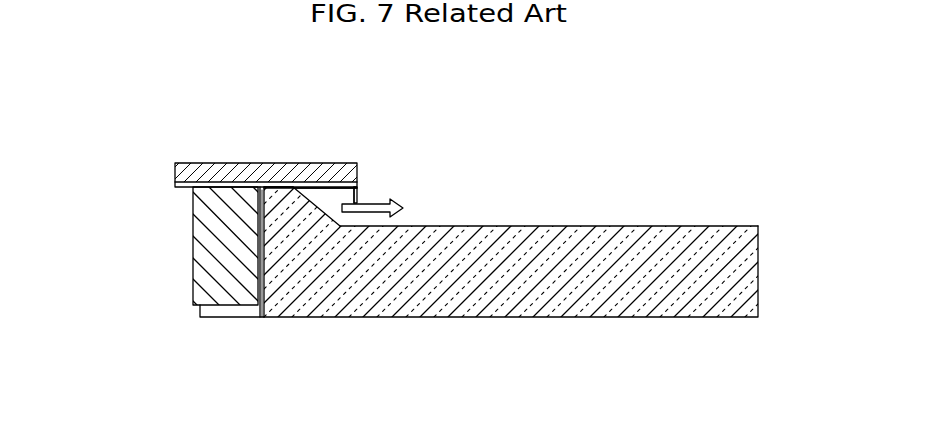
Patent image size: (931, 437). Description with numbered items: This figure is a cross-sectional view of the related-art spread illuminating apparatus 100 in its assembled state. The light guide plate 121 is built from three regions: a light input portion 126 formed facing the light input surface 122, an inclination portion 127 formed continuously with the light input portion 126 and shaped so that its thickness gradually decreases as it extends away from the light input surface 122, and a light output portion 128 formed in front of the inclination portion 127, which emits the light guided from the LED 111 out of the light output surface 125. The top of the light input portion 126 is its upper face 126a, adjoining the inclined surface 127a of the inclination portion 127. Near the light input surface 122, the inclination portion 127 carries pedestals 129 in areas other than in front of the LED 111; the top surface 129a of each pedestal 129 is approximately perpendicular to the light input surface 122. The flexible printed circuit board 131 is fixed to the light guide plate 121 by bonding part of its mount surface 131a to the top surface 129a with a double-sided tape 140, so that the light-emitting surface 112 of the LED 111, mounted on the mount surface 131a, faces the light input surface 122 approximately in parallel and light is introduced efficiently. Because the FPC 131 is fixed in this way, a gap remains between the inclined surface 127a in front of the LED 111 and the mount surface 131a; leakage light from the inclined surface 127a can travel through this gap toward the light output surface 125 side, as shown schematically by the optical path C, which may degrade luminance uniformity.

The spread illuminating apparatus 100 is at (82, 95).
The flexible printed circuit board 131 is at (193, 163).
The mount surface 131a is at (224, 188).
The double-sided tape 140 is at (270, 186).
The top surface of side wall 126a is at (282, 187).
The inclined surface 127a is at (319, 187).
The top surface of pedestal 129a is at (347, 187).
The pedestal 129 is at (355, 192).
The light output surface 125 is at (592, 226).
The LED 111 is at (208, 258).
The light-emitting surface 112 is at (243, 264).
The light input surface 122 is at (268, 262).
The light input portion 126 is at (293, 263).
The inclination portion 127 is at (327, 262).
The light output portion 128 is at (555, 278).
The light guide plate 121 is at (500, 260).
The optical path C is at (376, 202).